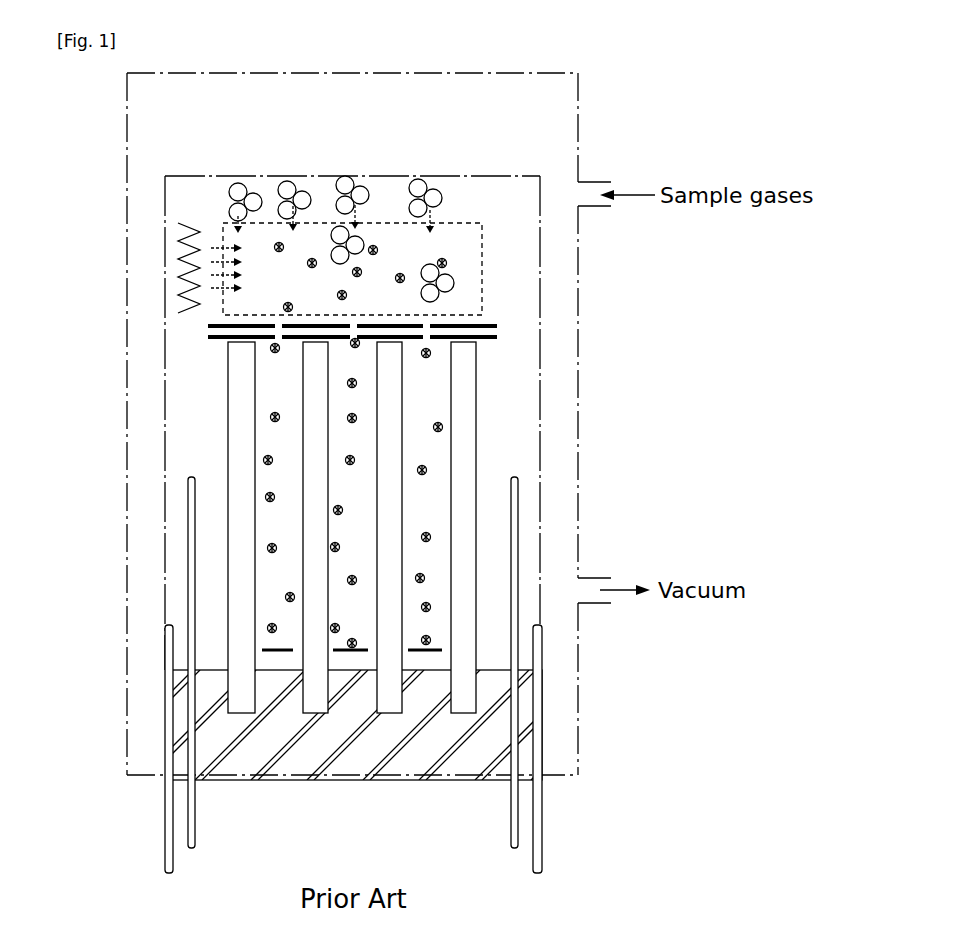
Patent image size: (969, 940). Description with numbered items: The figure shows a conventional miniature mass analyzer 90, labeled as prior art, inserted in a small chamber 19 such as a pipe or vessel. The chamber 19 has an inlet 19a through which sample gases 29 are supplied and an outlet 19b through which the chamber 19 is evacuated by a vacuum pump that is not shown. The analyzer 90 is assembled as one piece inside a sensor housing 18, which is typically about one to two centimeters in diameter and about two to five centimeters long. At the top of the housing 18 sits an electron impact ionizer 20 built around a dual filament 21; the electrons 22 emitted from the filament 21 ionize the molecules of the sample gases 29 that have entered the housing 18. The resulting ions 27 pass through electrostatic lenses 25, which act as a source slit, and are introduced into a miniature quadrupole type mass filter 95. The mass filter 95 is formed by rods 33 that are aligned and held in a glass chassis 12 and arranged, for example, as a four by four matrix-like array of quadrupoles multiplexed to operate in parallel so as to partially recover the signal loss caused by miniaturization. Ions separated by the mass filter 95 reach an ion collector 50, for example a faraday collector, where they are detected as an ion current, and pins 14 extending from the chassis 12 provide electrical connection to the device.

The miniature mass analyzer 90 is at (177, 154).
The sensor housing 18 is at (163, 192).
The chamber 19 is at (580, 456).
The inlet 19a is at (597, 182).
The outlet 19b is at (598, 603).
The electron impact ionizer 20 is at (158, 278).
The filament 21 is at (178, 233).
The electrons 22 is at (217, 245).
The electrostatic lenses 25 is at (207, 331).
The ions 27 is at (312, 260).
The sample gases 29 is at (432, 195).
The rods 33 is at (465, 430).
The quadrupole type mass filter 95 is at (176, 397).
The ion collector 50 is at (263, 643).
The pins for electrical connection 14 is at (186, 650).
The glass chassis 12 is at (205, 735).